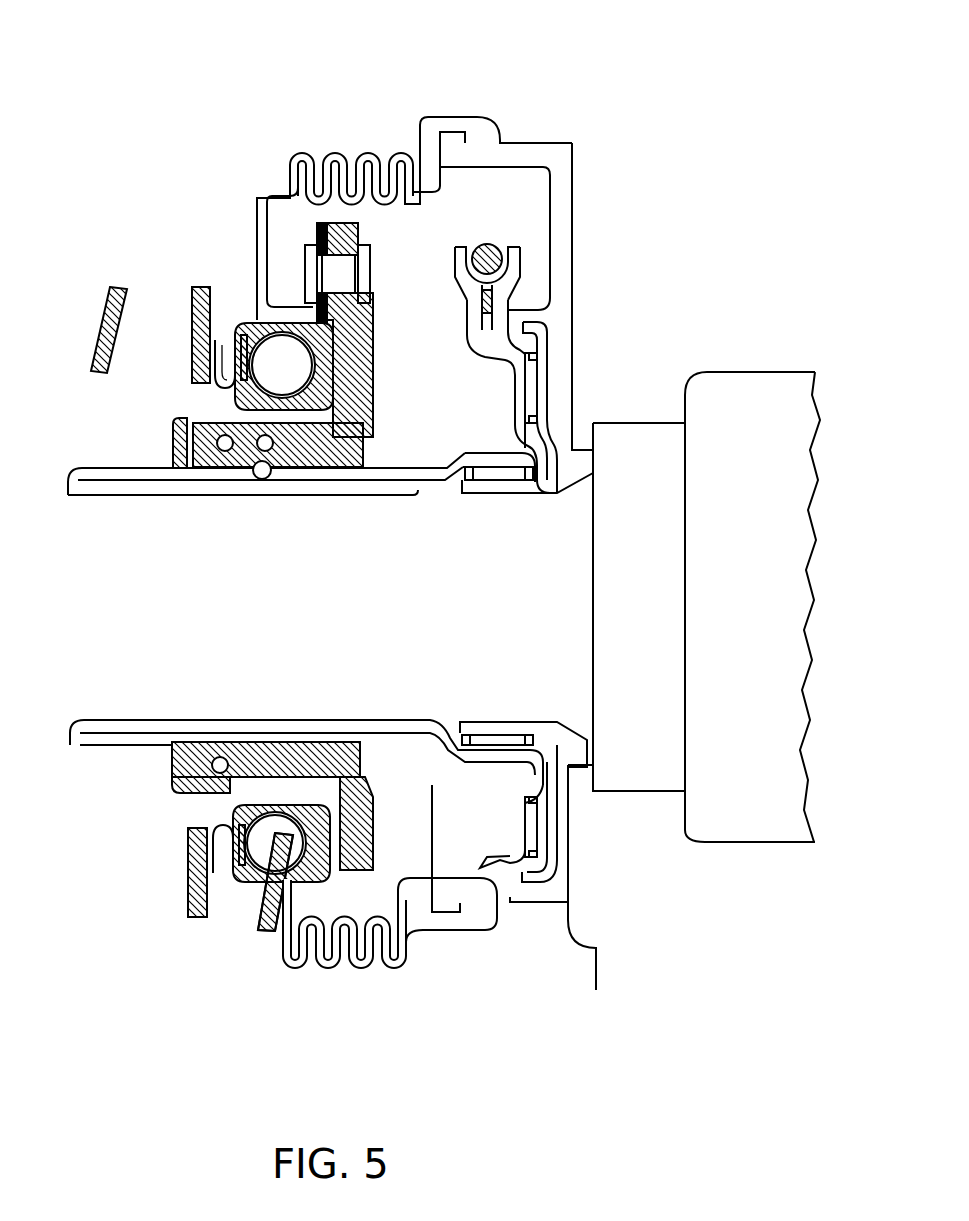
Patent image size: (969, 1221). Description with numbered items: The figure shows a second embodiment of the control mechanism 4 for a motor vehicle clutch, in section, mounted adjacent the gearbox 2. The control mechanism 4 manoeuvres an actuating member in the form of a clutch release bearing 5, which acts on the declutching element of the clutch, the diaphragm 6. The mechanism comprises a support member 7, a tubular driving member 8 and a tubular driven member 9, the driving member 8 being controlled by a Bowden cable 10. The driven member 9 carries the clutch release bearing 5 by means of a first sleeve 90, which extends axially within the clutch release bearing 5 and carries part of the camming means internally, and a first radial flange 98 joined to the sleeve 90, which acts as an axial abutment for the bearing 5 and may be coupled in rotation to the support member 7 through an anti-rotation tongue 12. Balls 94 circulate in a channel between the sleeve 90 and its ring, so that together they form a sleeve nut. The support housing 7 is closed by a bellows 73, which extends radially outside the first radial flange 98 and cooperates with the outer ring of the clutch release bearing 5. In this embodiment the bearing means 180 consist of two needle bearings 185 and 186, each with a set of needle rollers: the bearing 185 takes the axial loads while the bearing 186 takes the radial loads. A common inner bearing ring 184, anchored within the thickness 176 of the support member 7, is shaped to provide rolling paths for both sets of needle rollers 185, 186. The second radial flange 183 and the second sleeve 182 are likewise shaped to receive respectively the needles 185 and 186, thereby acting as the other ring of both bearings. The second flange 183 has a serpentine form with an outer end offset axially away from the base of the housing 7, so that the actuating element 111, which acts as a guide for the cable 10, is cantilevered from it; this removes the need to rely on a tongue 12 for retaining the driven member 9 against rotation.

The gearbox 2 is at (628, 890).
The control mechanism 4 is at (458, 90).
The clutch release bearing 5 is at (229, 296).
The diaphragm 6 is at (88, 304).
The support member 7 is at (537, 138).
The tubular driving member 8 is at (95, 745).
The tubular driven member 9 is at (392, 890).
The Bowden cable 10 is at (491, 242).
The tongue 12 is at (317, 237).
The bellows 73 is at (339, 154).
The first sleeve 90 is at (230, 793).
The balls 94 is at (260, 480).
The first radial flange 98 is at (373, 808).
The actuating element 111 is at (502, 303).
The thickness of the support member 176 is at (547, 888).
The bearing means 180 is at (545, 822).
The second sleeve 182 is at (100, 468).
The second radial flange 183 is at (510, 818).
The common inner bearing ring 184 is at (549, 362).
The needle bearing 185 is at (536, 380).
The needle bearing 186 is at (482, 466).